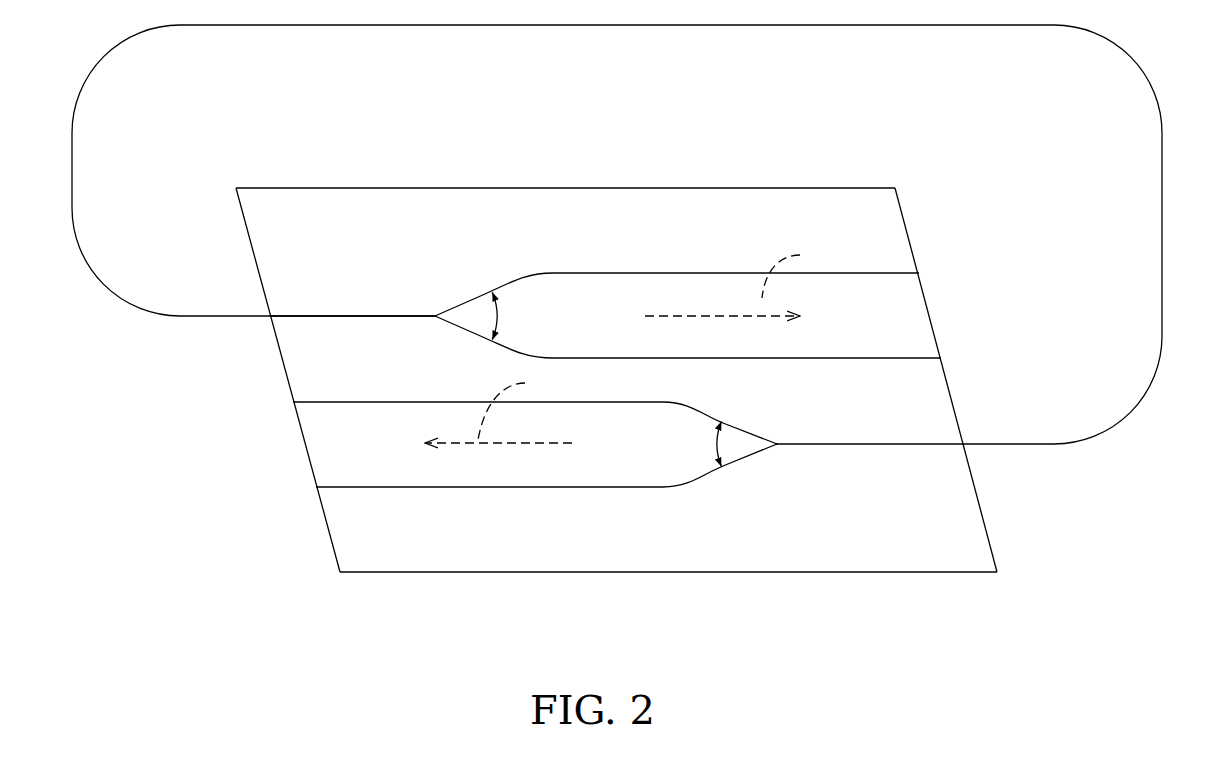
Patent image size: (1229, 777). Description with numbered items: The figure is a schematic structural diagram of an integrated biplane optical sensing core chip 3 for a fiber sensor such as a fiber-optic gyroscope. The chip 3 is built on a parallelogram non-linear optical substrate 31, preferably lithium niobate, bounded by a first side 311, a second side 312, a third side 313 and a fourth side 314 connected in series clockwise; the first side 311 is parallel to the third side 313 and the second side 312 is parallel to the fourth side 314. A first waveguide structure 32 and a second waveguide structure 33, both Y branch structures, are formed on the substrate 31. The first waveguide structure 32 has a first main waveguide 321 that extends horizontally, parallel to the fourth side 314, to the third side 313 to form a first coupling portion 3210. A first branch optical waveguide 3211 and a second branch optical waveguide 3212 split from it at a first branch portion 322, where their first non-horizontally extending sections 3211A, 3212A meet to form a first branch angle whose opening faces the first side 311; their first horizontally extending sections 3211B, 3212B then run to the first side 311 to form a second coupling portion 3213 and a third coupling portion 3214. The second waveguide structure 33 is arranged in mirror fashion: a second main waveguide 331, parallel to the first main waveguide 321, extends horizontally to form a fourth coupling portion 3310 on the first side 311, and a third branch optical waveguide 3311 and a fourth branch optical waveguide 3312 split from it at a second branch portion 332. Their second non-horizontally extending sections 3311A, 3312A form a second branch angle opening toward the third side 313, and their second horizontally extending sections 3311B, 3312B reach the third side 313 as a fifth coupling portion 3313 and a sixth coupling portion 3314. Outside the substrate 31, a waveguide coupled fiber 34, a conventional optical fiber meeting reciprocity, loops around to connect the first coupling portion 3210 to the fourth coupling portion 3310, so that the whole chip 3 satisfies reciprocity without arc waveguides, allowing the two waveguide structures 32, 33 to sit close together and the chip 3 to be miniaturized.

The integrated biplane optical sensing core chip 3 is at (303, 567).
The non-linear optical substrate 31 is at (937, 550).
The first side 311 is at (905, 225).
The second side 312 is at (723, 572).
The third side 313 is at (253, 252).
The fourth side 314 is at (757, 188).
The first waveguide structure 32 is at (458, 287).
The first main waveguide 321 is at (352, 316).
The first coupling portion 3210 is at (271, 316).
The first branch optical waveguide 3211 is at (598, 273).
The first non-horizontally extending section 3211A is at (517, 280).
The first horizontally extending section 3211B is at (665, 273).
The second branch optical waveguide 3212 is at (625, 358).
The first non-horizontally extending section 3212A is at (490, 338).
The first horizontally extending section 3212B is at (745, 358).
The second coupling portion 3213 is at (918, 273).
The third coupling portion 3214 is at (940, 358).
The first branch portion 322 is at (435, 316).
The second waveguide structure 33 is at (758, 469).
The second main waveguide 331 is at (903, 444).
The fourth coupling portion 3310 is at (963, 444).
The third branch optical waveguide 3311 is at (555, 402).
The second non-horizontally extending section 3311A is at (723, 405).
The second horizontally extending section 3311B is at (455, 402).
The fourth branch optical waveguide 3312 is at (643, 487).
The second non-horizontally extending section 3312A is at (723, 467).
The second horizontally extending section 3312B is at (512, 487).
The fifth coupling portion 3313 is at (294, 402).
The sixth coupling portion 3314 is at (317, 487).
The second branch portion 332 is at (777, 444).
The waveguide coupled fiber 34 is at (1103, 432).